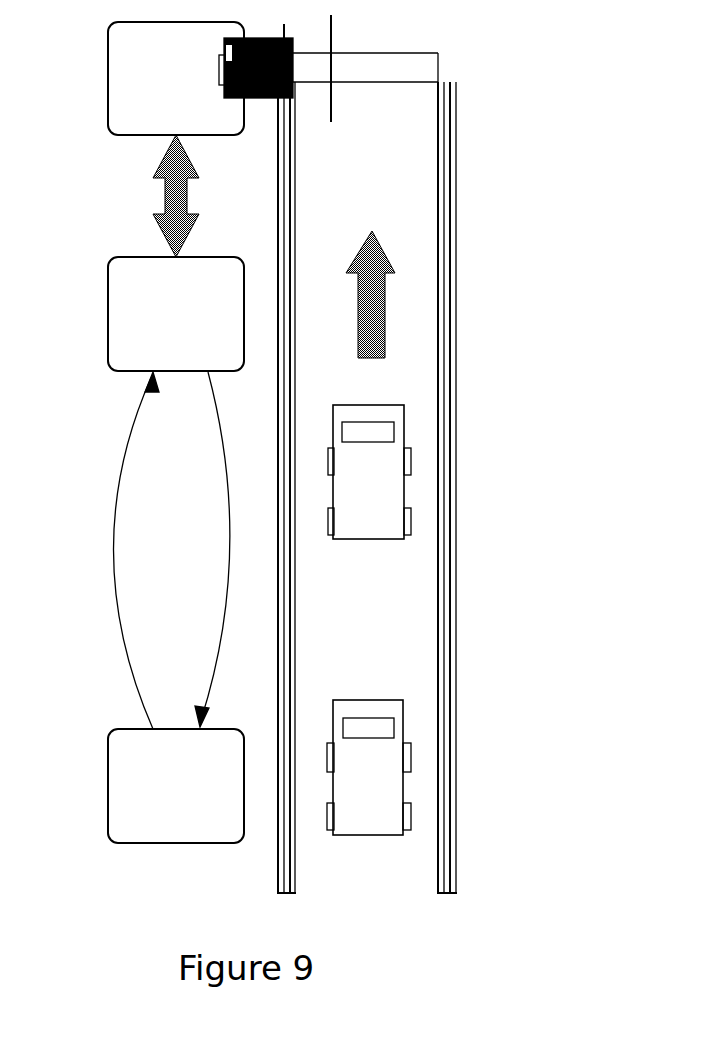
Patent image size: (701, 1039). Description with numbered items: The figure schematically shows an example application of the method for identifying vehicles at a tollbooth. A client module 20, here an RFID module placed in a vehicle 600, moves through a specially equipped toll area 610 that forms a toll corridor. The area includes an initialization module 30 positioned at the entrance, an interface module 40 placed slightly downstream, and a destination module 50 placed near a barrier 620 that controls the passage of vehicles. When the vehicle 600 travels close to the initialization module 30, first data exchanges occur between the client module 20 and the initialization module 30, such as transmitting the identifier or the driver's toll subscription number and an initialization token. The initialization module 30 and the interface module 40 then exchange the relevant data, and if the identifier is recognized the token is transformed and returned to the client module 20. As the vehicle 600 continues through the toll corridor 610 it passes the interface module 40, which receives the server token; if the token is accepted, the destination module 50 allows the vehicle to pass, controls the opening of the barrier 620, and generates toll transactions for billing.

The destination module 50 is at (130, 64).
The interface module 40 is at (130, 296).
The initialization module 30 is at (125, 763).
The barrier 620 is at (410, 58).
The toll area 610 is at (422, 603).
The vehicle 600 is at (423, 790).
The client module 20 is at (373, 812).